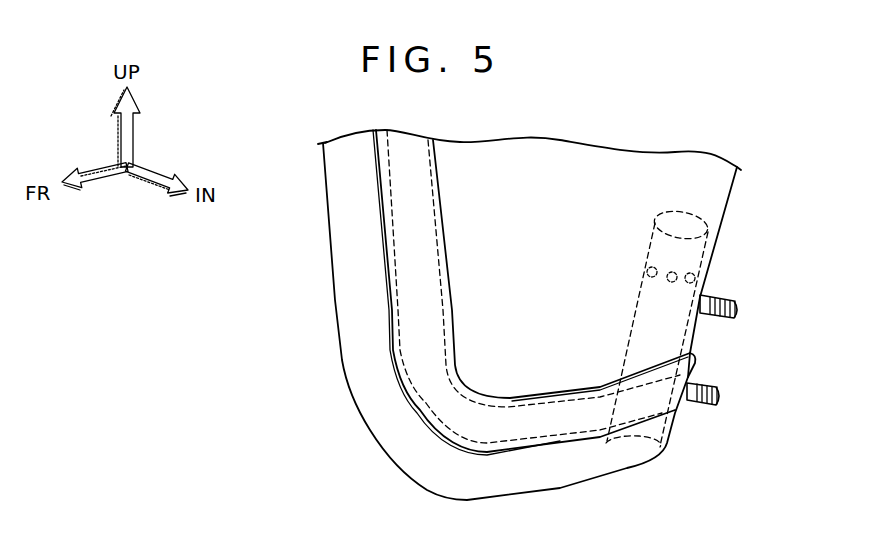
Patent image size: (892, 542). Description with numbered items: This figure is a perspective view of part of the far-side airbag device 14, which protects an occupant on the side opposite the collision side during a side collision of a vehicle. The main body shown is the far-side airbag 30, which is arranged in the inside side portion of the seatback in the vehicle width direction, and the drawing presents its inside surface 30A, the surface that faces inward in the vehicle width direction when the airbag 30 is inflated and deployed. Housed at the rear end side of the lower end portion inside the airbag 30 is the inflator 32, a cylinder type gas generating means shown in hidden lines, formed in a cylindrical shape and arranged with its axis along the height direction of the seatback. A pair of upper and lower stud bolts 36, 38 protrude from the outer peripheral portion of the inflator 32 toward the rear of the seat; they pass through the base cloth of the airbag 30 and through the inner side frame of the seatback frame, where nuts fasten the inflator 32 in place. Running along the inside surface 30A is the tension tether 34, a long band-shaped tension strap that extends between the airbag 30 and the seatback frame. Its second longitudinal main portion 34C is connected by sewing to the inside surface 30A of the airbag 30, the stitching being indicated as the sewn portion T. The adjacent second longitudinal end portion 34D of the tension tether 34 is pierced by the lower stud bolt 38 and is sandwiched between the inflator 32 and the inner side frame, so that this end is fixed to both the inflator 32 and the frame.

The far-side airbag device 14 is at (296, 280).
The far-side airbag 30 is at (350, 395).
The inside surface of the airbag 30A is at (363, 310).
The inflator 32 is at (697, 218).
The tension tether 34 is at (460, 449).
The second longitudinal main portion 34C is at (378, 220).
The second longitudinal end portion 34D is at (676, 411).
The stud bolt 36 is at (741, 306).
The stud bolt 38 is at (723, 394).
The sewn portion T is at (392, 257).